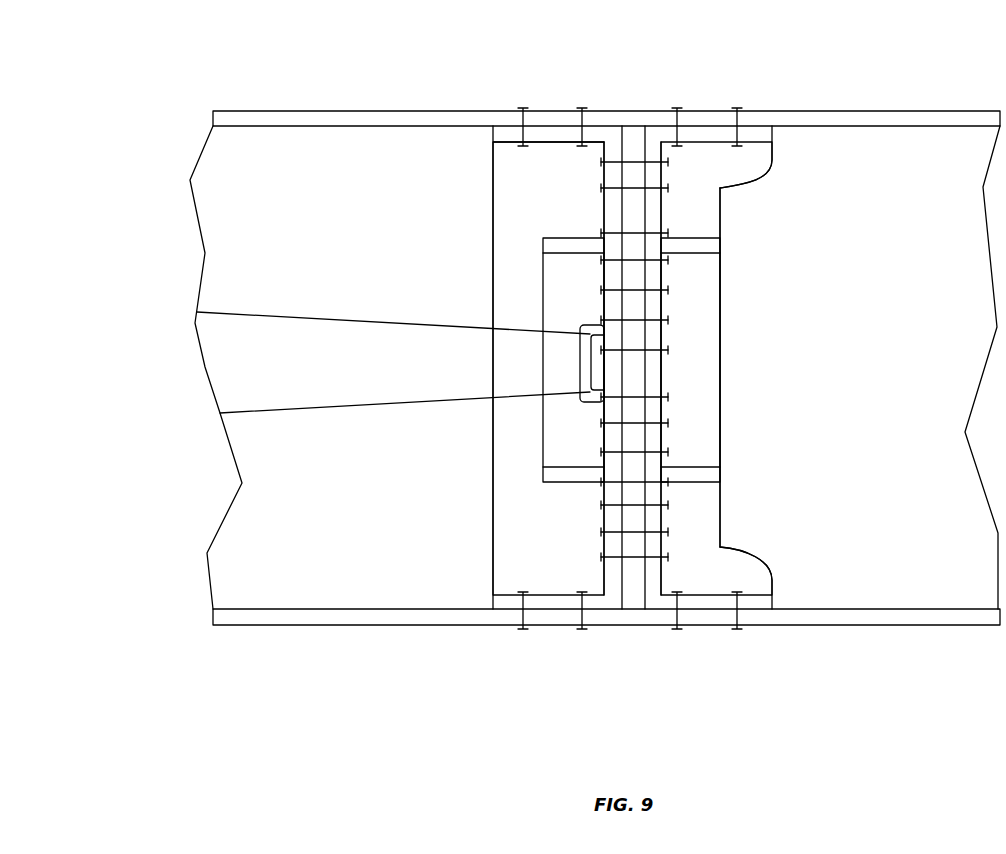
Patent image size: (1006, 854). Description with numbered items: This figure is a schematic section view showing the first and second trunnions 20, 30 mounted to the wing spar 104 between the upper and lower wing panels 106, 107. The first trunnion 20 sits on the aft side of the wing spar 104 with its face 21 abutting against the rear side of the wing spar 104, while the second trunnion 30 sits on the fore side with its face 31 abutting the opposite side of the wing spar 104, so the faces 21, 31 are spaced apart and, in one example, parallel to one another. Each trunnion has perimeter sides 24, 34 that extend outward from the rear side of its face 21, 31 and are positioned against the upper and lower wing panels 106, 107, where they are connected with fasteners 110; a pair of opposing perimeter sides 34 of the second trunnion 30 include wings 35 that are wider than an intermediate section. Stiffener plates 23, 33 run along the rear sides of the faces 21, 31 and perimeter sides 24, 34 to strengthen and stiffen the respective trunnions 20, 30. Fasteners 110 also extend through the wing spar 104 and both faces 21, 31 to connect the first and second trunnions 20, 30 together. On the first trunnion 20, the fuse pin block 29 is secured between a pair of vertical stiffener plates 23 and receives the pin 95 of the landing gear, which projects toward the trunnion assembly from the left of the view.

The first trunnion 20 is at (552, 537).
The face 21 is at (603, 208).
The stiffener plates 23 is at (577, 290).
The perimeter sides 24 is at (520, 232).
The fuse pin block 29 is at (596, 343).
The second trunnion 30 is at (708, 510).
The face 31 is at (662, 211).
The stiffener plates 33 is at (662, 290).
The perimeter sides 34 is at (722, 323).
The wings 35 is at (748, 164).
The pin 95 is at (303, 353).
The wing spar 104 is at (630, 577).
The upper wing panel 106 is at (865, 117).
The lower wing panel 107 is at (302, 617).
The fasteners 110 is at (737, 108).